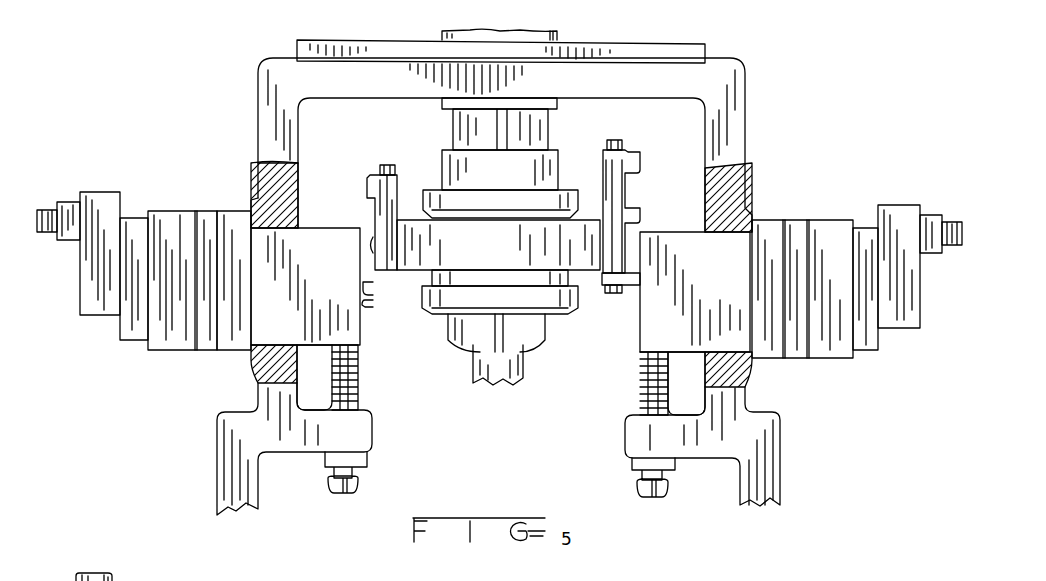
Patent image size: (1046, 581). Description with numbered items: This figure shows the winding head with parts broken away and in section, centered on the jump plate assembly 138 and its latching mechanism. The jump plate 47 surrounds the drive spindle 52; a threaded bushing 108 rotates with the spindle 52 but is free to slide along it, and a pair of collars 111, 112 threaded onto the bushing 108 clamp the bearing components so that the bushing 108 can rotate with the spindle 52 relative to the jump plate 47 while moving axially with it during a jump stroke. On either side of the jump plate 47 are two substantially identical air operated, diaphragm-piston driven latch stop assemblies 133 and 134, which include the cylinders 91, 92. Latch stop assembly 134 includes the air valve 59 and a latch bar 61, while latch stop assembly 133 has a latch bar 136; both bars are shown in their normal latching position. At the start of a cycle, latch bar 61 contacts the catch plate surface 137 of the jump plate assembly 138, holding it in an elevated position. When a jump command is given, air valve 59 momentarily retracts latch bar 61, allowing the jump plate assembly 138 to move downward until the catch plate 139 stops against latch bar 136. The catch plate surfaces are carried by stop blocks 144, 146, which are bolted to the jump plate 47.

The jump plate 47 is at (485, 253).
The drive spindle 52 is at (541, 125).
The air valve 59 is at (902, 205).
The latch bar 61 is at (637, 301).
The cylinder 91 is at (178, 352).
The cylinder 92 is at (828, 352).
The threaded bushing 108 is at (546, 172).
The collar 111 is at (428, 205).
The collar 112 is at (432, 300).
The latch stop assembly 133 is at (194, 201).
The latch stop assembly 134 is at (798, 198).
The latch bar 136 is at (368, 300).
The catch plate surface 137 is at (632, 285).
The jump plate assembly 138 is at (647, 184).
The catch plate 139 is at (371, 246).
The stop block 144 is at (378, 193).
The stop block 146 is at (617, 202).